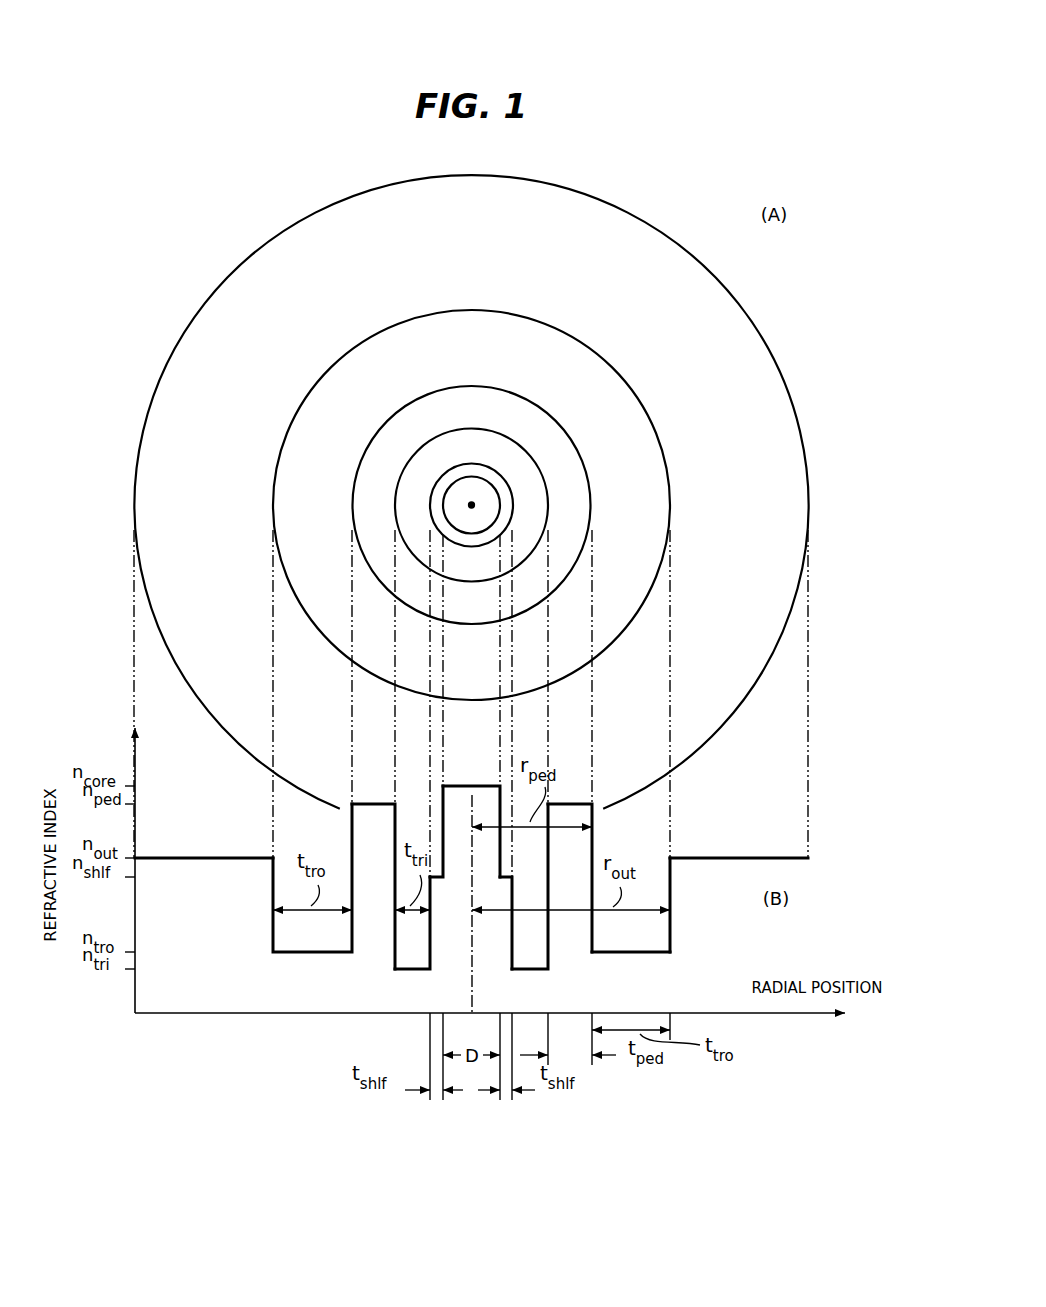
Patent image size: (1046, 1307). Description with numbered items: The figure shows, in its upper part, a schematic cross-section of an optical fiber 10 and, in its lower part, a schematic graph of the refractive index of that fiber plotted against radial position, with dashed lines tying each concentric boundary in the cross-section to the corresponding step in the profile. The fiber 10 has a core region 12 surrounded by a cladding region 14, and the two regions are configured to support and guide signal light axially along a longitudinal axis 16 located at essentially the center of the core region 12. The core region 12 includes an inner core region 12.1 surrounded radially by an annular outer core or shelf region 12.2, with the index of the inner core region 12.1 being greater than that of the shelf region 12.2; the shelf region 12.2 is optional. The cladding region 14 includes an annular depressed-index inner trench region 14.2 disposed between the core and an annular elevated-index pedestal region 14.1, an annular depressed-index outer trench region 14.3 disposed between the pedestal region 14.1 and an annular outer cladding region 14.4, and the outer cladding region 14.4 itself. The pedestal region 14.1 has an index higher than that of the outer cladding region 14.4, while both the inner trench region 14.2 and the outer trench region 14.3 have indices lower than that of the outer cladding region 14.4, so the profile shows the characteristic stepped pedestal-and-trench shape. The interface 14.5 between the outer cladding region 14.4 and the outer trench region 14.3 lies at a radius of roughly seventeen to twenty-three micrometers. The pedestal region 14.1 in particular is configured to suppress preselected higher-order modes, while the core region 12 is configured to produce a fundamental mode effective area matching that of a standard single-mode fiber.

In FIG. 1A, the optical fiber 10 is at (491, 492).
In FIG. 1B, the core region 12 is at (436, 966).
In FIG. 1A, the inner core region 12.1 is at (455, 505).
In FIG. 1B, the inner core region 12.1 is at (455, 1000).
In FIG. 1A, the outer core region (shelf region) 12.2 is at (500, 484).
In FIG. 1B, the outer core region (shelf region) 12.2 is at (440, 962).
In FIG. 1B, the cladding region 14 is at (471, 975).
In FIG. 1A, the pedestal region 14.1 is at (580, 497).
In FIG. 1B, the pedestal region 14.1 is at (356, 836).
In FIG. 1B, the inner trench region 14.2 is at (497, 906).
In FIG. 1B, the outer trench region 14.3 is at (310, 948).
In FIG. 1A, the outer cladding region 14.4 is at (768, 378).
In FIG. 1B, the outer cladding region 14.4 is at (197, 857).
In FIG. 1B, the interface 14.5 is at (675, 933).
In FIG. 1A, the longitudinal axis 16 is at (471, 505).